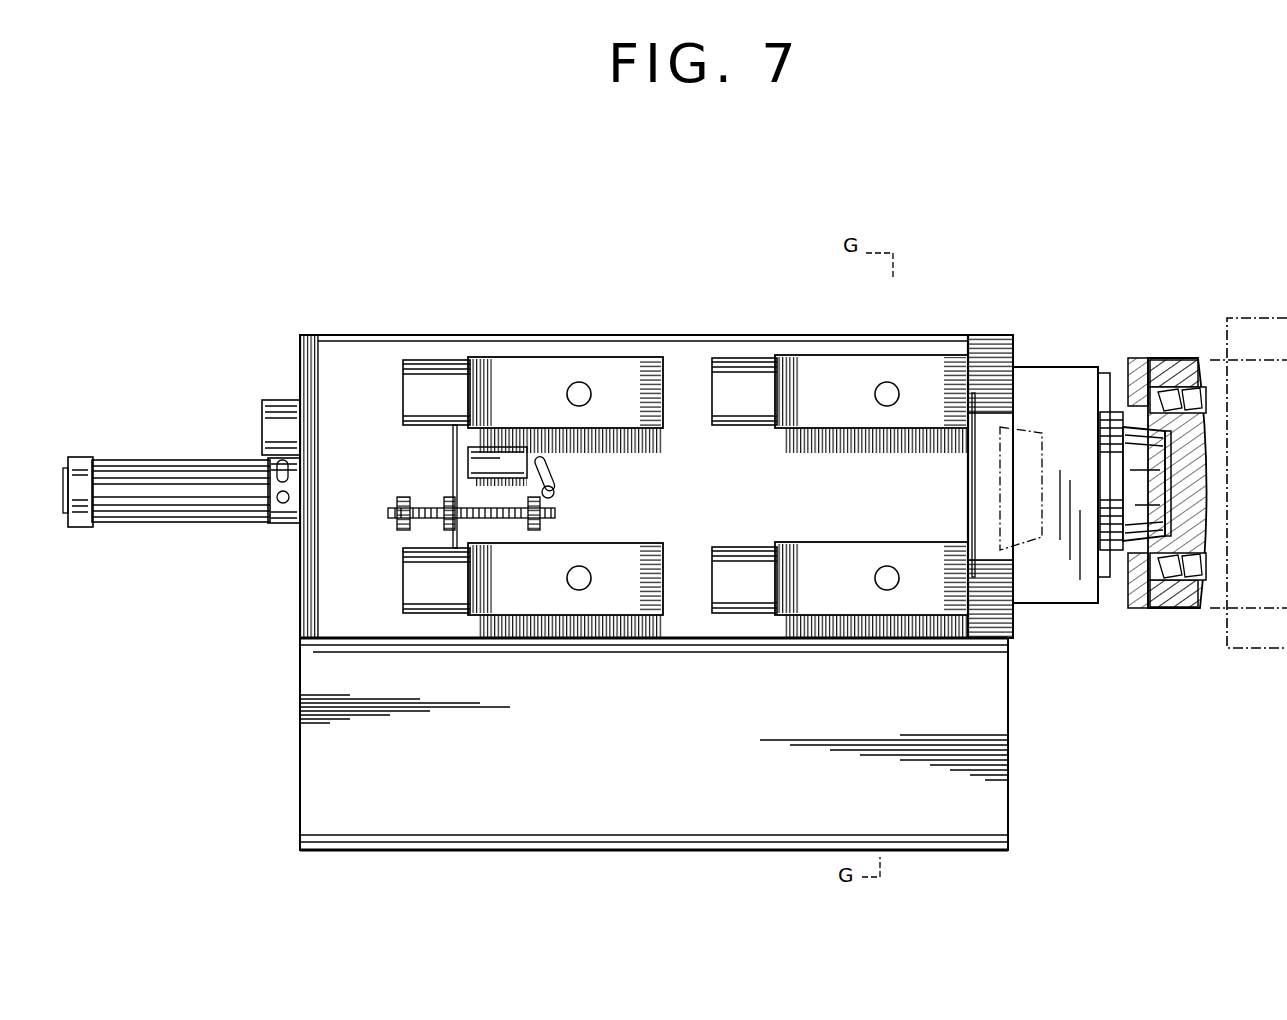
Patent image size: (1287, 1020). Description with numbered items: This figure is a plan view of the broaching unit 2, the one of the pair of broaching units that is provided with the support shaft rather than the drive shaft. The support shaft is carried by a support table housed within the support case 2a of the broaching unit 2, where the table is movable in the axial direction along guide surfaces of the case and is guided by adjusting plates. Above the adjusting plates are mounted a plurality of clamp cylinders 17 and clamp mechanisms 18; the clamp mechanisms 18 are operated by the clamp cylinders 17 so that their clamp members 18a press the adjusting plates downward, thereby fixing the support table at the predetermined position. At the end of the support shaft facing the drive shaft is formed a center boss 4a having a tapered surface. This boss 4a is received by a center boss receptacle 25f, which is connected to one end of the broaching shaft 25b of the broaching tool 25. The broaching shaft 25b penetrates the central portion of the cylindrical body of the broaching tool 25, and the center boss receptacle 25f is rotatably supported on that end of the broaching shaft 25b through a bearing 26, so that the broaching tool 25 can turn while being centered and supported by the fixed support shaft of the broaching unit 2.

The broaching unit 2 is at (1020, 704).
The support case 2a is at (656, 632).
The clamp cylinder 17 is at (432, 372).
The clamp mechanism 18 is at (566, 372).
The clamp member 18a is at (888, 406).
The broaching tool 25 is at (1254, 330).
The broaching shaft 25b is at (1173, 368).
The center boss receptacle 25f is at (1195, 458).
The bearing 26 is at (1207, 397).
The center boss 4a is at (1208, 528).